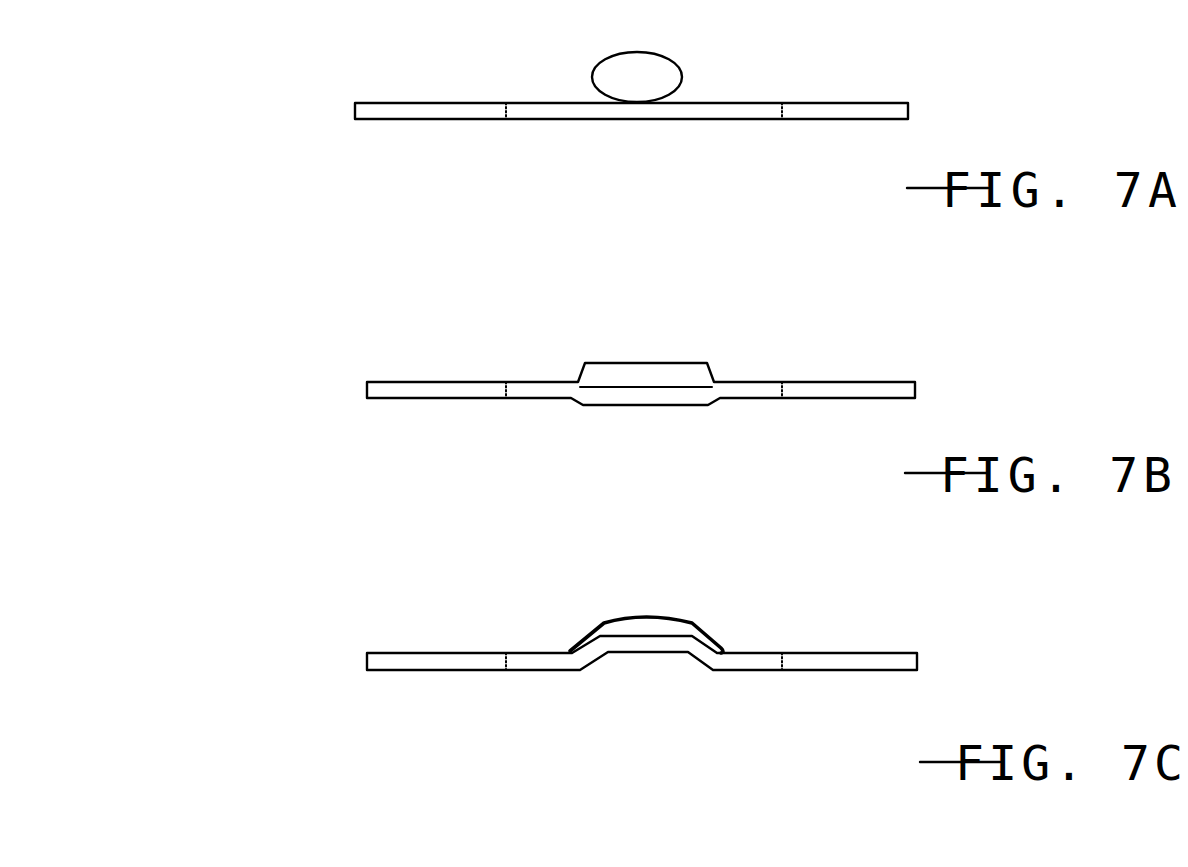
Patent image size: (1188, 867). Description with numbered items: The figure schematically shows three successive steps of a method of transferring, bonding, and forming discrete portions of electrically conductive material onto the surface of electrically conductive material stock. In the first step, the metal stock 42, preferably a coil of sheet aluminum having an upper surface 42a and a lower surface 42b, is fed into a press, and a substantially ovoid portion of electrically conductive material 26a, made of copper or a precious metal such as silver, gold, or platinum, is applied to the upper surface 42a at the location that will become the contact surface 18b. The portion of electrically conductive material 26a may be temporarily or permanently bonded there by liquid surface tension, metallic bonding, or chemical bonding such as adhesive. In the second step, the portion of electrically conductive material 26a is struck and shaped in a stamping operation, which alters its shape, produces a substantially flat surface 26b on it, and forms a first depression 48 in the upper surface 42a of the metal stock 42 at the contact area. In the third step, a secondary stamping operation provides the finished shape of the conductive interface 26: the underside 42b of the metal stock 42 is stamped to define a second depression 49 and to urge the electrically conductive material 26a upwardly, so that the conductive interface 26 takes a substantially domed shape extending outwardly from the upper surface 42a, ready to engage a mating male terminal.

In FIG. 7A, the electrically conductive material 42 is at (855, 108).
In FIG. 7B, the electrically conductive material 42 is at (832, 388).
In FIG. 7C, the electrically conductive material 42 is at (823, 658).
In FIG. 7A, the upper surface 42a is at (467, 103).
In FIG. 7B, the upper surface 42a is at (455, 382).
In FIG. 7C, the upper surface 42a is at (463, 653).
In FIG. 7C, the lower surface 42b is at (562, 672).
In FIG. 7A, the contact surface 18b is at (548, 103).
In FIG. 7B, the contact surface 18b is at (540, 382).
In FIG. 7C, the contact surface 18b is at (538, 653).
In FIG. 7C, the conductive interface 26 is at (716, 632).
In FIG. 7A, the portion of electrically conductive material 26a is at (658, 58).
In FIG. 7B, the portion of electrically conductive material 26a is at (688, 375).
In FIG. 7C, the portion of electrically conductive material 26a is at (619, 627).
In FIG. 7B, the substantially flat surface 26b is at (665, 363).
In FIG. 7B, the first depression 48 is at (622, 387).
In FIG. 7C, the second depression 49 is at (662, 652).